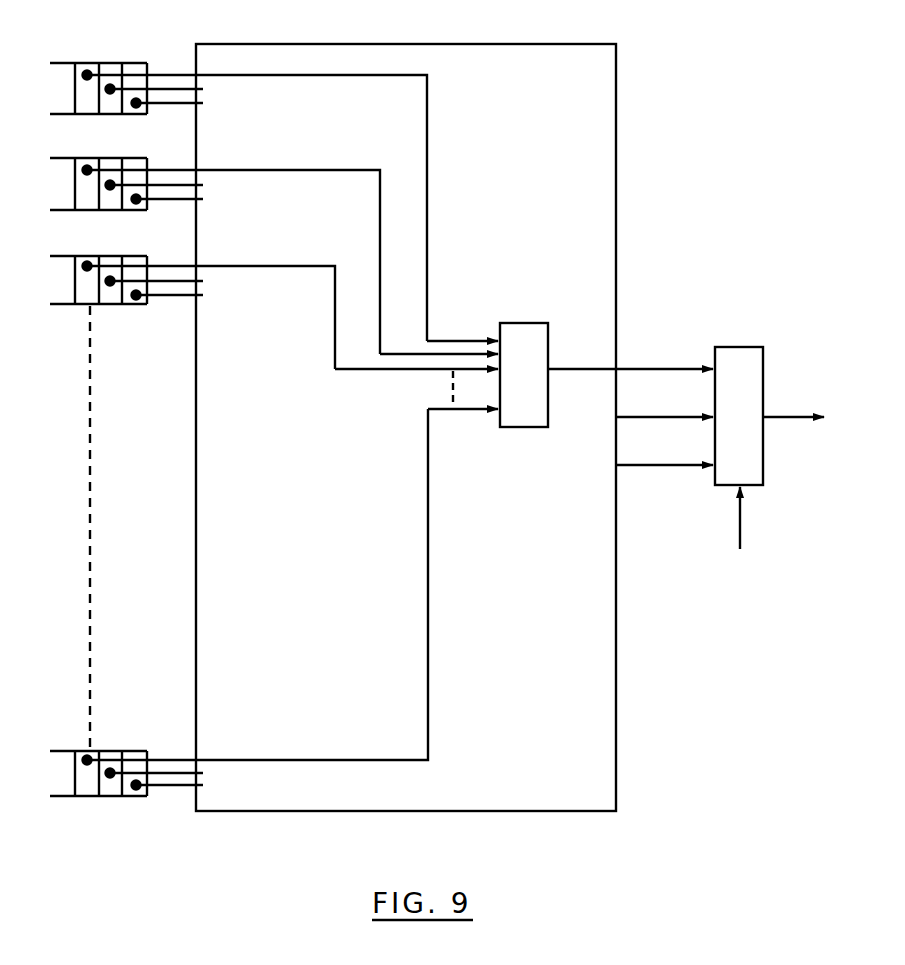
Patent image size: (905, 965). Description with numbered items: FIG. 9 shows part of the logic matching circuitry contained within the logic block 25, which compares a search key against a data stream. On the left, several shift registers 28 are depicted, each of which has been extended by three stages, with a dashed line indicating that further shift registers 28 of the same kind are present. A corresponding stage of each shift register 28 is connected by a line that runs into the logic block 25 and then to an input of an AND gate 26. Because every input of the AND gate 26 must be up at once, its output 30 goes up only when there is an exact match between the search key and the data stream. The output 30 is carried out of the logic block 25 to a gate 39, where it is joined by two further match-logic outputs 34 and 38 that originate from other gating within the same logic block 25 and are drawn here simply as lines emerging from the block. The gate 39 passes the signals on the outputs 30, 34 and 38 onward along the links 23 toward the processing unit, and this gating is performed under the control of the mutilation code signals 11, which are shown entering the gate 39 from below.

The mutilation code signals 11 is at (742, 528).
The links 23 is at (791, 420).
The logic block 25 is at (452, 10).
The AND gate 26 is at (556, 296).
The shift registers 28 is at (106, 30).
The output 30 is at (671, 342).
The output 34 is at (671, 391).
The output 38 is at (671, 439).
The gate 39 is at (752, 346).